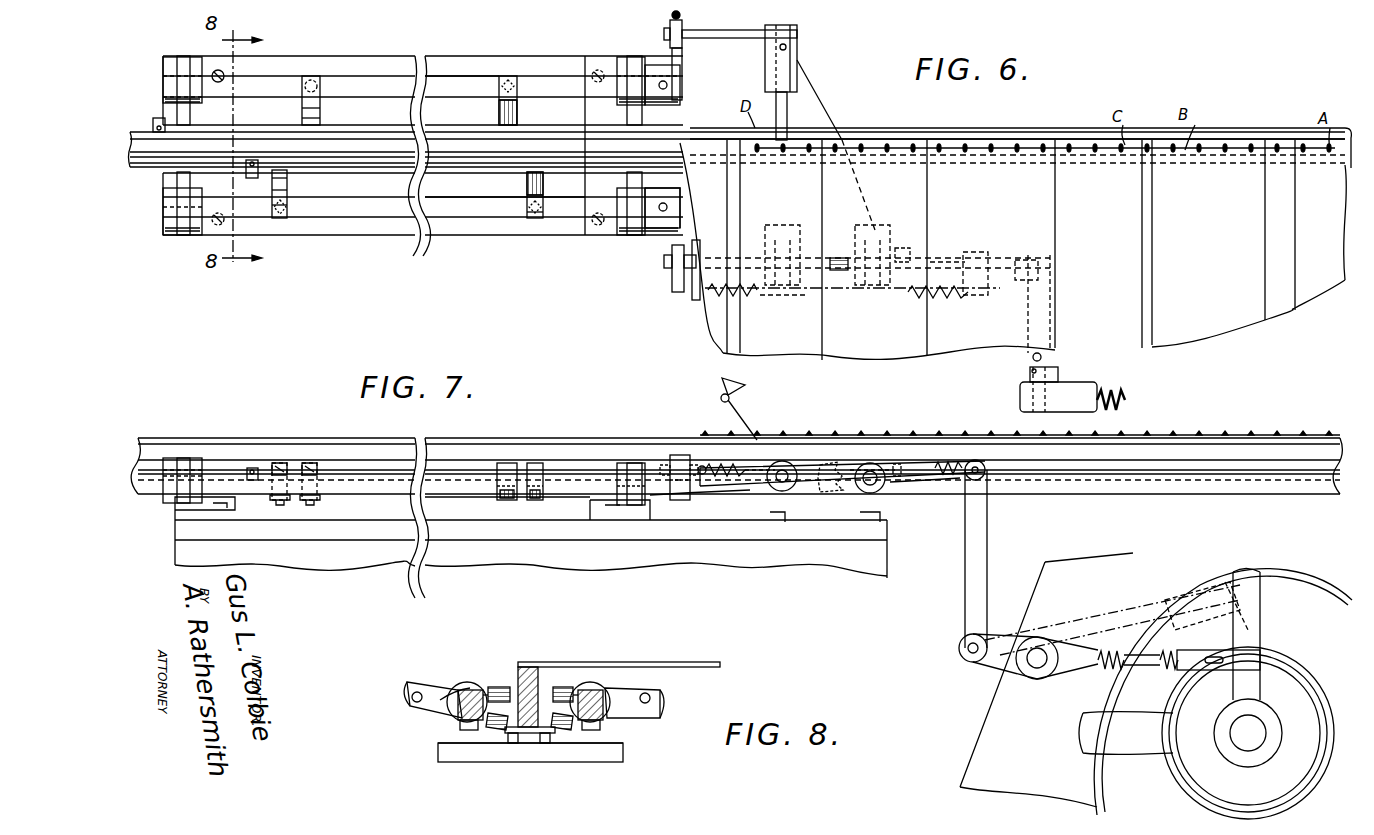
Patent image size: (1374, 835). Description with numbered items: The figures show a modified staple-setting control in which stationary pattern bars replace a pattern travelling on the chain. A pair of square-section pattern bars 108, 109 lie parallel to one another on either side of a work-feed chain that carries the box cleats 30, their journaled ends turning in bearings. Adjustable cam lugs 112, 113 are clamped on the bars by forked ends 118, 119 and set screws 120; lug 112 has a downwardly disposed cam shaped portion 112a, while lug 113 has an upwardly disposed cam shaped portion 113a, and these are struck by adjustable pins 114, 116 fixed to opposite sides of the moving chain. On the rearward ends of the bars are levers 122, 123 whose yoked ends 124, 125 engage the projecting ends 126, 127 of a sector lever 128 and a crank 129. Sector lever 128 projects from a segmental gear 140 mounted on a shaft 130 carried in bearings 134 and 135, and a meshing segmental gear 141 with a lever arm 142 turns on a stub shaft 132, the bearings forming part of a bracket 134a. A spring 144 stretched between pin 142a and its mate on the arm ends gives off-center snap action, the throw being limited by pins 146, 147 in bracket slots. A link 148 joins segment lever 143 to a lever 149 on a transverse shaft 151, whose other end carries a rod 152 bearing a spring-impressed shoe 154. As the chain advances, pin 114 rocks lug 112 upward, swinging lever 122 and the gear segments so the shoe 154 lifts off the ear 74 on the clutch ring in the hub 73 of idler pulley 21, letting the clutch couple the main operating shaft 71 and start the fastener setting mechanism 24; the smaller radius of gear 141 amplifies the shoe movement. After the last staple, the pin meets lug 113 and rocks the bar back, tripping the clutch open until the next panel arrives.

In FIG. 7, the idler pulley 21 is at (1080, 733).
In FIG. 7, the fastener setting mechanism 24 is at (745, 388).
In FIG. 6, the box cleats 30 is at (722, 128).
In FIG. 7, the box cleats 30 is at (660, 438).
In FIG. 8, the box cleats 30 is at (530, 667).
In FIG. 7, the main operating shaft 71 is at (1250, 733).
In FIG. 7, the hub 73 is at (1180, 775).
In FIG. 7, the ear 74 is at (1262, 662).
In FIG. 6, the pattern bar 108 is at (475, 215).
In FIG. 7, the pattern bar 108 is at (450, 480).
In FIG. 8, the pattern bar 108 is at (623, 718).
In FIG. 6, the pattern bar 109 is at (478, 85).
In FIG. 8, the pattern bar 109 is at (455, 690).
In FIG. 6, the cam lug 112 is at (322, 118).
In FIG. 8, the cam lug 112 is at (495, 687).
In FIG. 6, the cam shaped portion 112a is at (300, 110).
In FIG. 7, the cam shaped portion 112a is at (280, 463).
In FIG. 8, the cam shaped portion 112a is at (510, 690).
In FIG. 6, the cam lug 113 is at (499, 112).
In FIG. 8, the cam lug 113 is at (500, 730).
In FIG. 6, the cam shaped portion 113a is at (517, 108).
In FIG. 7, the cam shaped portion 113a is at (505, 500).
In FIG. 6, the adjustable pin 114 is at (250, 178).
In FIG. 6, the adjustable pin 116 is at (156, 118).
In FIG. 6, the forked end 118 is at (287, 212).
In FIG. 8, the forked end 118 is at (580, 690).
In FIG. 6, the forked end 119 is at (537, 215).
In FIG. 8, the forked end 119 is at (478, 690).
In FIG. 6, the set screw 120 is at (311, 76).
In FIG. 7, the set screw 120 is at (285, 505).
In FIG. 8, the set screw 120 is at (460, 730).
In FIG. 6, the lever 122 is at (682, 215).
In FIG. 8, the lever 122 is at (640, 690).
In FIG. 6, the lever 123 is at (682, 72).
In FIG. 8, the lever 123 is at (440, 688).
In FIG. 6, the yoked end 124 is at (684, 275).
In FIG. 8, the yoked end 124 is at (660, 690).
In FIG. 6, the yoked end 125 is at (664, 9).
In FIG. 8, the yoked end 125 is at (410, 712).
In FIG. 6, the projecting end 126 is at (664, 262).
In FIG. 8, the projecting end 126 is at (660, 705).
In FIG. 6, the projecting end 127 is at (664, 34).
In FIG. 8, the projecting end 127 is at (412, 697).
In FIG. 6, the sector lever 128 is at (775, 295).
In FIG. 6, the crank 129 is at (760, 30).
In FIG. 6, the shaft 130 is at (787, 112).
In FIG. 7, the shaft 130 is at (782, 491).
In FIG. 7, the stub shaft 132 is at (868, 492).
In FIG. 6, the bearing 134 is at (765, 228).
In FIG. 7, the bracket 134a is at (905, 490).
In FIG. 6, the bearing 135 is at (797, 60).
In FIG. 6, the segmental gear 140 is at (785, 300).
In FIG. 7, the segmental gear 140 is at (822, 465).
In FIG. 6, the segmental gear 141 is at (840, 270).
In FIG. 7, the segmental gear 141 is at (856, 470).
In FIG. 7, the lever arm 142 is at (705, 465).
In FIG. 6, the pin 142a is at (980, 292).
In FIG. 7, the pin 142a is at (985, 466).
In FIG. 6, the segment lever 143 is at (975, 252).
In FIG. 7, the segment lever 143 is at (950, 462).
In FIG. 6, the spring 144 is at (945, 300).
In FIG. 7, the spring 144 is at (720, 470).
In FIG. 6, the pin 146 is at (712, 250).
In FIG. 7, the pin 146 is at (690, 498).
In FIG. 6, the pin 147 is at (903, 248).
In FIG. 7, the pin 147 is at (900, 465).
In FIG. 6, the link 148 is at (946, 274).
In FIG. 7, the link 148 is at (987, 540).
In FIG. 6, the lever 149 is at (1035, 255).
In FIG. 7, the lever 149 is at (1030, 640).
In FIG. 6, the transverse shaft 151 is at (1050, 372).
In FIG. 7, the transverse shaft 151 is at (1040, 680).
In FIG. 7, the rod 152 is at (1140, 665).
In FIG. 7, the shoe 154 is at (1210, 650).